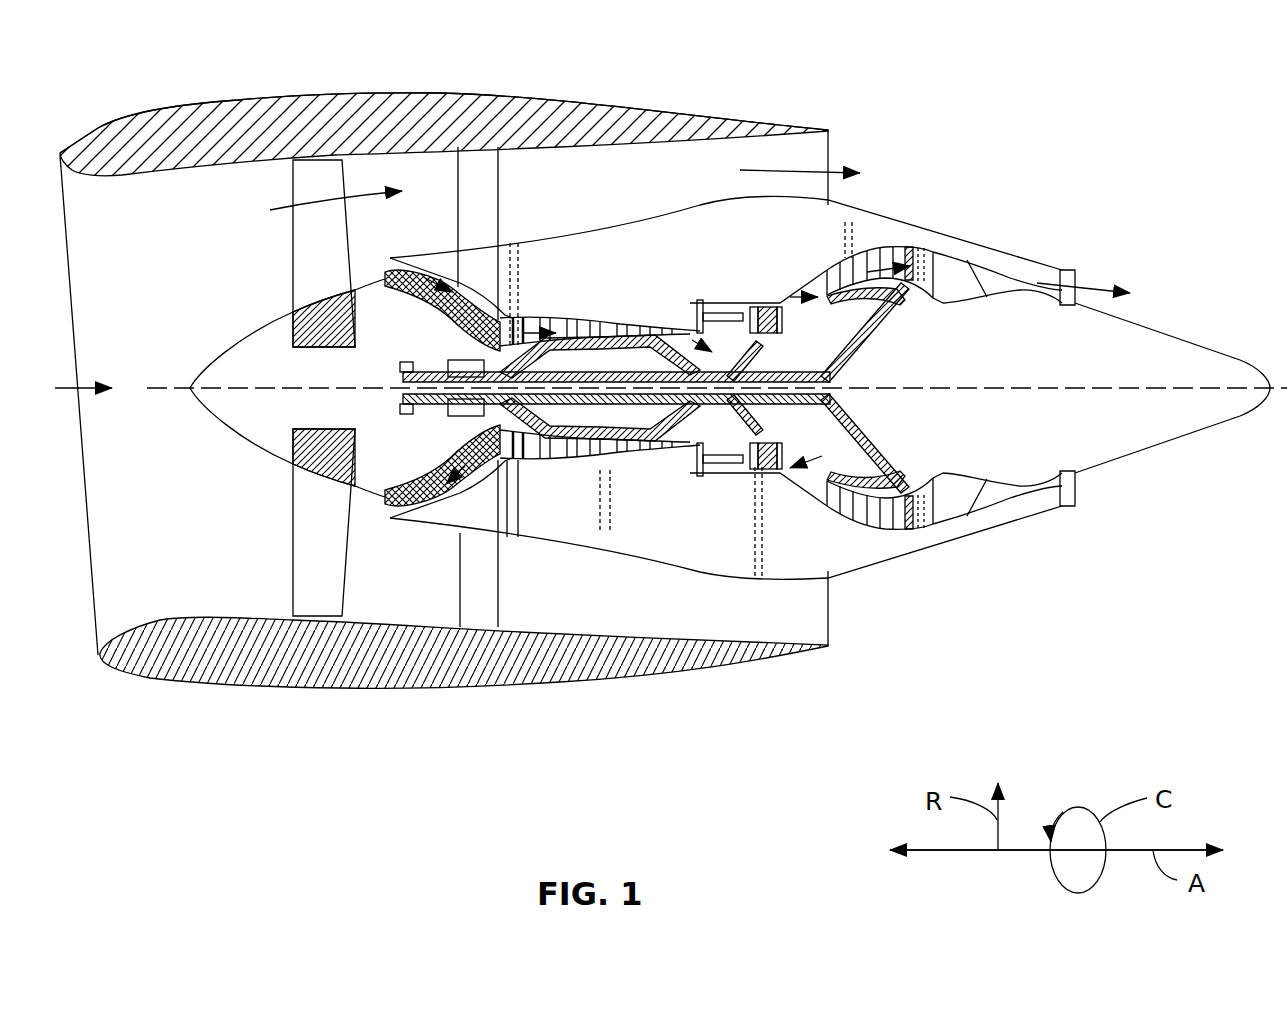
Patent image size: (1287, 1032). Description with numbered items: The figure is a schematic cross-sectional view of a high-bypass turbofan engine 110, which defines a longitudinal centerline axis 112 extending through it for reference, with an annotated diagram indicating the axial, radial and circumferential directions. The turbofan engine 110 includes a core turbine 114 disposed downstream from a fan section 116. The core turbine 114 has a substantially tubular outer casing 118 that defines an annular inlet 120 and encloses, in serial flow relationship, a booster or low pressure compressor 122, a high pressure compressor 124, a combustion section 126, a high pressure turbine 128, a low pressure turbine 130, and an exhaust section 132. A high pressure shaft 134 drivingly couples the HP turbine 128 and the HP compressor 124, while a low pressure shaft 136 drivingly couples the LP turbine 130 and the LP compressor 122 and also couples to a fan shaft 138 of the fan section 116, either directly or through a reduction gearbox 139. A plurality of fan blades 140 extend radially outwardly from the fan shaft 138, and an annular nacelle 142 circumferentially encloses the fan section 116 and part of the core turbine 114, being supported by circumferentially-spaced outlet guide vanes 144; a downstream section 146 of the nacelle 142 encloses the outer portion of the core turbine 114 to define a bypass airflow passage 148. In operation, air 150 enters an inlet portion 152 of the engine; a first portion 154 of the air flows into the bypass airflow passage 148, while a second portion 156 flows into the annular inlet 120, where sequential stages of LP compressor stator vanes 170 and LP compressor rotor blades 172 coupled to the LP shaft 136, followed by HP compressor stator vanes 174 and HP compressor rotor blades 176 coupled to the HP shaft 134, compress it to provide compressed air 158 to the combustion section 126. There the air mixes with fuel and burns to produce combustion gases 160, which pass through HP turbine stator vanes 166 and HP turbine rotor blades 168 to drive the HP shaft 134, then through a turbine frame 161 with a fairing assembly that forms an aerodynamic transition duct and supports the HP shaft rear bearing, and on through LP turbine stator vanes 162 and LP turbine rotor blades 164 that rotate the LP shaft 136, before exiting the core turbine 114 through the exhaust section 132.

The turbofan engine 110 is at (985, 100).
The centerline axis 112 is at (1042, 387).
The core turbine 114 is at (640, 272).
The fan section 116 is at (325, 80).
The outer casing 118 is at (663, 563).
The annular inlet 120 is at (400, 505).
The low pressure compressor 122 is at (462, 463).
The high pressure compressor 124 is at (531, 458).
The combustion section 126 is at (720, 470).
The high pressure turbine 128 is at (858, 433).
The low pressure turbine 130 is at (920, 530).
The exhaust section 132 is at (1082, 278).
The high pressure shaft 134 is at (830, 373).
The low pressure shaft 136 is at (463, 360).
The fan shaft 138 is at (347, 350).
The reduction gearbox 139 is at (490, 455).
The fan blades 140 is at (293, 570).
The nacelle 142 is at (340, 692).
The outlet guide vanes 144 is at (498, 167).
The downstream section 146 is at (730, 110).
The bypass airflow passage 148 is at (667, 191).
The air 150 is at (85, 385).
The inlet portion 152 is at (93, 614).
The first portion of the air 154 is at (313, 197).
The second portion of the air 156 is at (373, 273).
The compressed air 158 is at (700, 338).
The combustion gases 160 is at (795, 296).
The turbine frame 161 is at (840, 306).
The LP turbine stator vanes 162 is at (830, 270).
The LP turbine rotor blades 164 is at (835, 227).
The HP turbine stator vanes 166 is at (767, 530).
The HP turbine rotor blades 168 is at (765, 455).
The LP compressor stator vanes 170 is at (415, 512).
The LP compressor rotor blades 172 is at (440, 512).
The HP compressor stator vanes 174 is at (622, 460).
The HP compressor rotor blades 176 is at (660, 470).